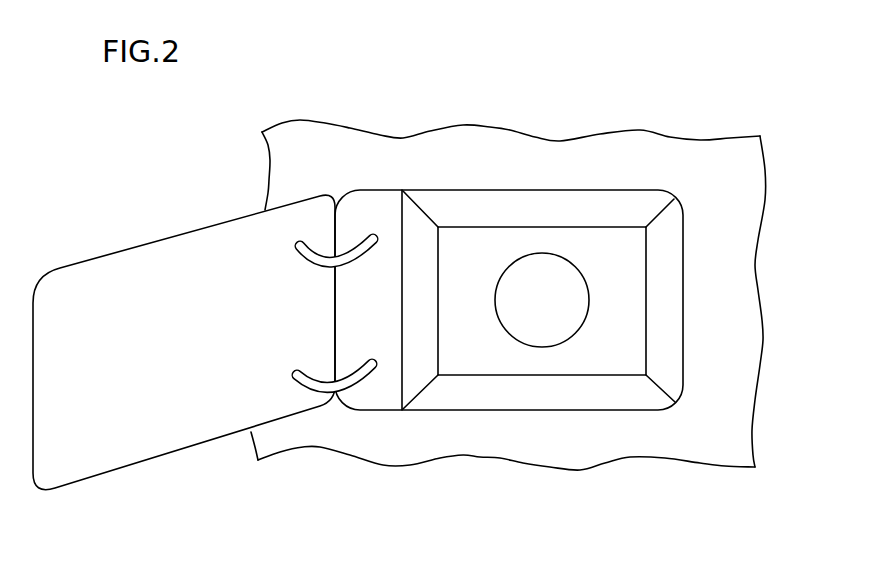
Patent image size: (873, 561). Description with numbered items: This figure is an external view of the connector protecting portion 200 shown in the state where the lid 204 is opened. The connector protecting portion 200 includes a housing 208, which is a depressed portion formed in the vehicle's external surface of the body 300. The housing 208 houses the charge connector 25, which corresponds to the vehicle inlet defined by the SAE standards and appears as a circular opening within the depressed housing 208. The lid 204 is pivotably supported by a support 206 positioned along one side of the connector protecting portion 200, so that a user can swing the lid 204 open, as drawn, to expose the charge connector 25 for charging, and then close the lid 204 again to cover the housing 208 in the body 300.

The connector protecting portion 200 is at (572, 168).
The lid 204 is at (125, 278).
The support 206 is at (355, 257).
The housing 208 is at (657, 260).
The charge connector 25 is at (565, 287).
The body 300 is at (723, 342).